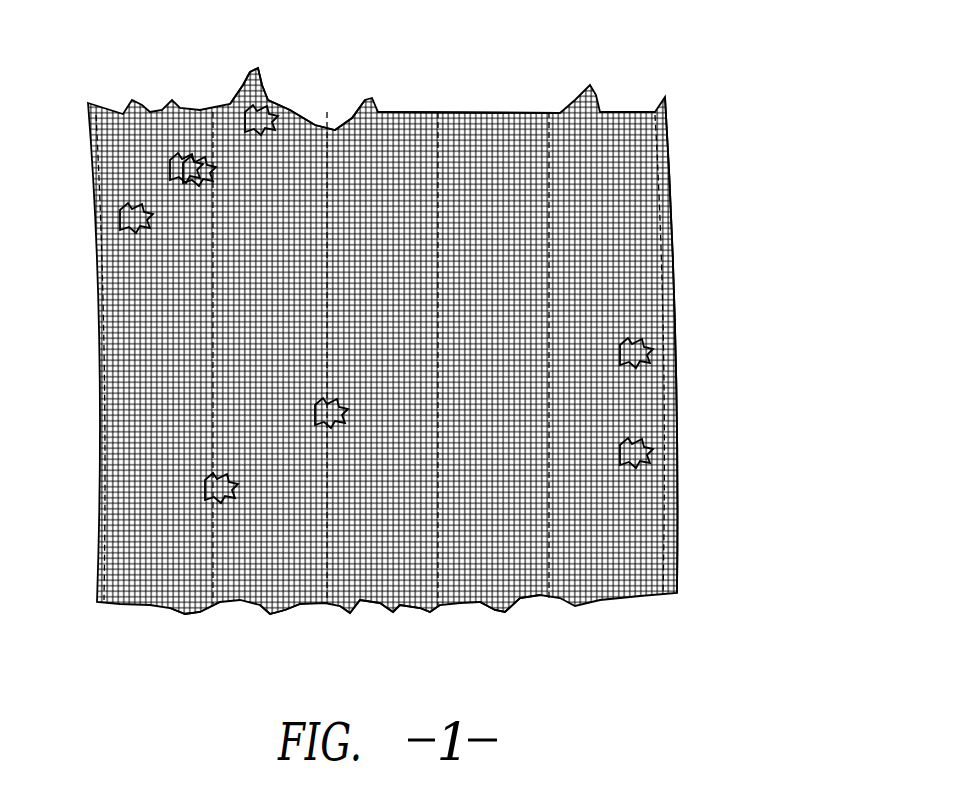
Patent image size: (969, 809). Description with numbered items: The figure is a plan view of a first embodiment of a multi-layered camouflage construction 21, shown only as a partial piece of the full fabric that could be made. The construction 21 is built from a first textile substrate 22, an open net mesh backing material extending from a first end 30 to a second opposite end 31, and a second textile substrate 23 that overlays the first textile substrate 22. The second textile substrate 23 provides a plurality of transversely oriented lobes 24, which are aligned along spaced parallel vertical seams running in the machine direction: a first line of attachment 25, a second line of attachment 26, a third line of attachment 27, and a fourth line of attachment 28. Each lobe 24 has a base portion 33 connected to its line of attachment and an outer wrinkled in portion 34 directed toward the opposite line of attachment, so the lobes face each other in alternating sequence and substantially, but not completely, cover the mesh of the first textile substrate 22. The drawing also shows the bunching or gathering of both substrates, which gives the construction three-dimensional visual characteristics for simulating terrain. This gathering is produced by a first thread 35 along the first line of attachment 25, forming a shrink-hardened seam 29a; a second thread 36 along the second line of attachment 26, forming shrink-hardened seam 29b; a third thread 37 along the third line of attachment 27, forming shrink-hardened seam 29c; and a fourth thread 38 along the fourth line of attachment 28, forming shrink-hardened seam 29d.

The camouflage construction 21 is at (574, 78).
The first textile substrate 22 is at (257, 110).
The second textile substrate 23 is at (300, 140).
The lobe 24 is at (182, 158).
The first line of attachment 25 is at (222, 616).
The second line of attachment 26 is at (333, 614).
The third line of attachment 27 is at (447, 614).
The fourth line of attachment 28 is at (557, 611).
The shrink-hardened seam 29a is at (215, 483).
The shrink-hardened seam 29b is at (327, 410).
The shrink-hardened seam 29c is at (635, 348).
The shrink-hardened seam 29d is at (633, 443).
The first end 30 is at (388, 118).
The second opposite end 31 is at (375, 595).
The base portion 33 is at (195, 160).
The outer wrinkled in portion 34 is at (130, 208).
The first thread 35 is at (183, 610).
The second thread 36 is at (293, 604).
The third thread 37 is at (412, 602).
The fourth thread 38 is at (527, 597).